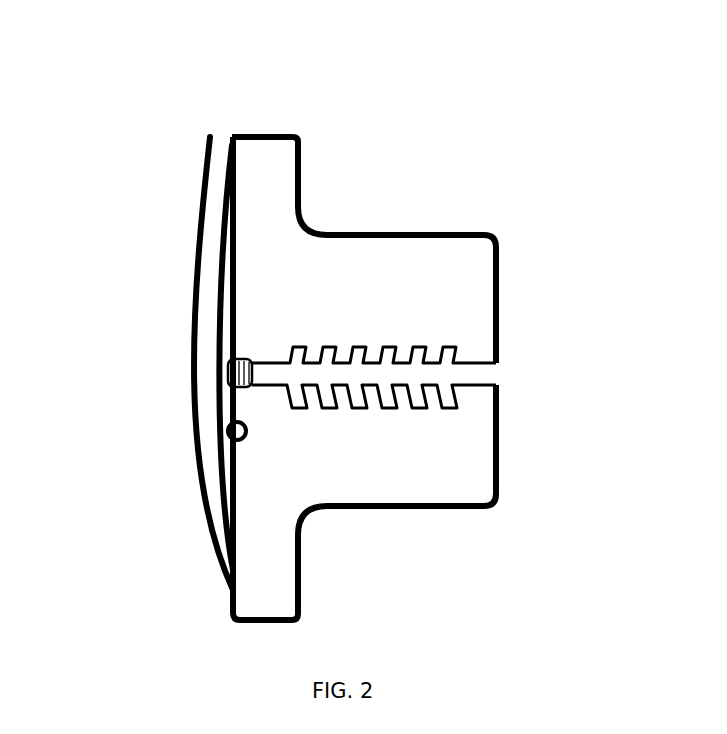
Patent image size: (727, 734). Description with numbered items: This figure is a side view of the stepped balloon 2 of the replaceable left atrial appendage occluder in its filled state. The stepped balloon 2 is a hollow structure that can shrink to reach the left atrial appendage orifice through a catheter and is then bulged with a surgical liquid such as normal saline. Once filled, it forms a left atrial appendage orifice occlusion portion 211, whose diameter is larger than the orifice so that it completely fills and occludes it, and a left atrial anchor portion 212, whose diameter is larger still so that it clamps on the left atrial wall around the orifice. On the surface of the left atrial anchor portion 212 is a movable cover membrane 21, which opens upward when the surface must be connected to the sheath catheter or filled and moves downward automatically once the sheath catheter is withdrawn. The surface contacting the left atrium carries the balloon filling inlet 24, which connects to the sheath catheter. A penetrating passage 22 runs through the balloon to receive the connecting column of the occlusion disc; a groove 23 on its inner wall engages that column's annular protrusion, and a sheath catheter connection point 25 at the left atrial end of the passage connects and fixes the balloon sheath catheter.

The stepped balloon 2 is at (437, 467).
The movable cover membrane 21 is at (197, 290).
The left atrial appendage orifice occlusion portion 211 is at (453, 298).
The left atrial anchor portion 212 is at (252, 267).
The penetrating passage 22 is at (478, 378).
The groove 23 is at (450, 407).
The balloon filling inlet 24 is at (226, 447).
The sheath catheter connection point 25 is at (236, 378).